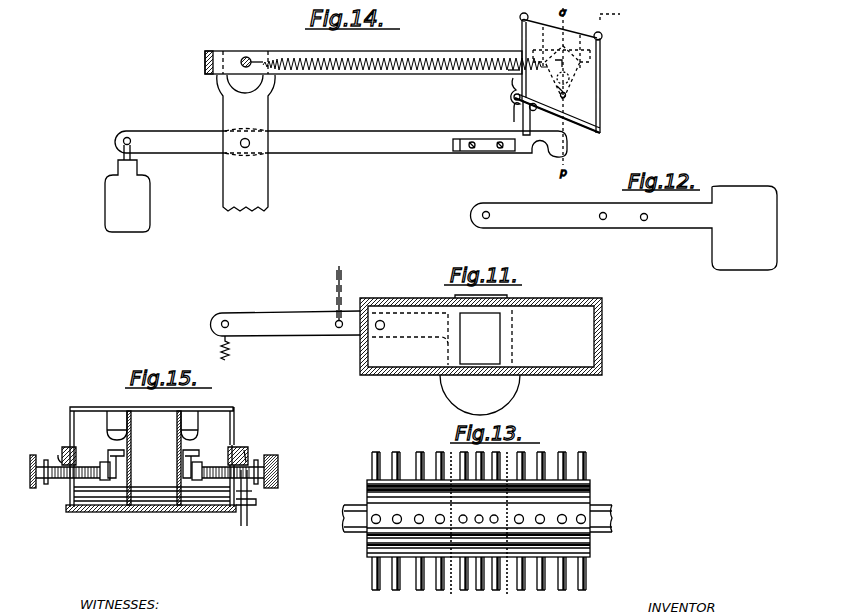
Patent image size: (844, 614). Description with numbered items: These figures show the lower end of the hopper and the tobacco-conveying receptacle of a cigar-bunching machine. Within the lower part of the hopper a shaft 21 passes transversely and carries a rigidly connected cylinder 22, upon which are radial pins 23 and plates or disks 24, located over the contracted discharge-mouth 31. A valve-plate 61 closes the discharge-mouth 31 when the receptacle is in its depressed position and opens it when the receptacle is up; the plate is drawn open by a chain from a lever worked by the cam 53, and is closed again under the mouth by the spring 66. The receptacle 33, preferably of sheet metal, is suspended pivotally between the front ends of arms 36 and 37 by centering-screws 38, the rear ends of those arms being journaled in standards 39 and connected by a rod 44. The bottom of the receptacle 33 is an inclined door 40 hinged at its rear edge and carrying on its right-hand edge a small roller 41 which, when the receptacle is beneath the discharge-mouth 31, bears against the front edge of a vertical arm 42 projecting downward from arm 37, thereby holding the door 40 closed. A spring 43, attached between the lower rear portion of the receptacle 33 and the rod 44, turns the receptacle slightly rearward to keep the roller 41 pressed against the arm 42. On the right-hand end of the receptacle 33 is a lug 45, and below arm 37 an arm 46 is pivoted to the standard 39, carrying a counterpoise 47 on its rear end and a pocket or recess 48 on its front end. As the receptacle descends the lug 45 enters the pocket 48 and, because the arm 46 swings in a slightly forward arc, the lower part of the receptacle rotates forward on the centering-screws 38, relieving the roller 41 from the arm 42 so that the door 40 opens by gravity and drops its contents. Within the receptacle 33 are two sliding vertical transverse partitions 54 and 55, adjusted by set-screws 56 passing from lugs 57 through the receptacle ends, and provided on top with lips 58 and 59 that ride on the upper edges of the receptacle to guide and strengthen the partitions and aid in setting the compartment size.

In FIG. 13, the shaft 21 is at (464, 518).
In FIG. 13, the cylinder 22 is at (590, 486).
In FIG. 13, the radial pins 23 is at (479, 520).
In FIG. 13, the plates or disks 24 is at (483, 529).
In FIG. 11, the discharge-mouth 31 is at (500, 341).
In FIG. 14, the receptacle 33 is at (600, 85).
In FIG. 15, the arm 36 is at (68, 445).
In FIG. 14, the arm 37 is at (363, 62).
In FIG. 15, the arm 37 is at (238, 446).
In FIG. 14, the centering-screws 38 is at (561, 54).
In FIG. 15, the centering-screws 38 is at (62, 450).
In FIG. 14, the standards 39 is at (246, 143).
In FIG. 14, the door 40 is at (586, 126).
In FIG. 15, the door 40 is at (151, 506).
In FIG. 14, the roller 41 is at (536, 117).
In FIG. 15, the roller 41 is at (253, 506).
In FIG. 14, the vertical arm 42 is at (518, 117).
In FIG. 15, the vertical arm 42 is at (250, 503).
In FIG. 14, the spring 43 is at (405, 78).
In FIG. 14, the rod 44 is at (246, 56).
In FIG. 14, the lug 45 is at (565, 98).
In FIG. 15, the lug 45 is at (252, 493).
In FIG. 14, the arm 46 is at (287, 142).
In FIG. 14, the counterpoise 47 is at (127, 188).
In FIG. 14, the pocket or recess 48 is at (568, 152).
In FIG. 15, the cam 53 is at (153, 450).
In FIG. 15, the partition 54 is at (131, 438).
In FIG. 15, the partition 55 is at (177, 445).
In FIG. 15, the set-screws 56 is at (154, 471).
In FIG. 15, the lugs 57 is at (151, 459).
In FIG. 14, the lip 58 is at (513, 21).
In FIG. 15, the lip 58 is at (152, 415).
In FIG. 14, the lip 59 is at (610, 40).
In FIG. 14, the valve-plate 61 is at (613, 10).
In FIG. 12, the valve-plate 61 is at (624, 228).
In FIG. 11, the valve-plate 61 is at (286, 301).
In FIG. 11, the spring 66 is at (233, 349).